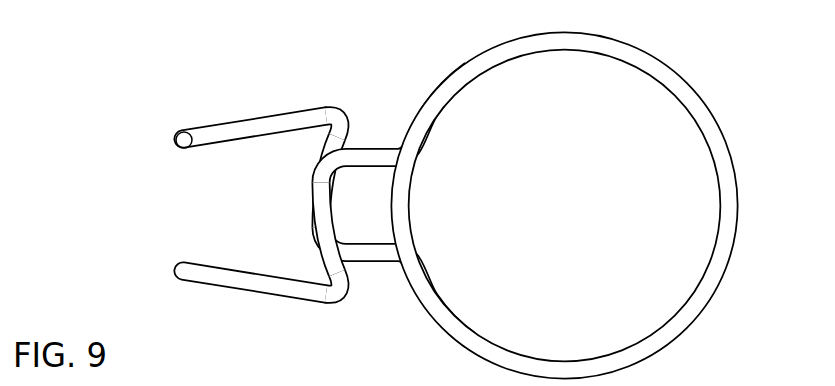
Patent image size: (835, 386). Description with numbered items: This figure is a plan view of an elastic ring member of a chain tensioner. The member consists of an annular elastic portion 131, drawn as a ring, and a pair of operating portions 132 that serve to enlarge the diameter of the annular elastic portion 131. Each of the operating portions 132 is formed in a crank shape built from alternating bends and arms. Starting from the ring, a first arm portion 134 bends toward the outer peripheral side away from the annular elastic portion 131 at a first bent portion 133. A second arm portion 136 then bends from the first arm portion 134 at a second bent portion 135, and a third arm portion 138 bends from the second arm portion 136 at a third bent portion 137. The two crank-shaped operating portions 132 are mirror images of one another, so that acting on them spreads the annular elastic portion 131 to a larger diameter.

The annular elastic portion 131 is at (717, 137).
The operating portions 132 is at (296, 175).
The first bent portion 133 is at (433, 190).
The first arm portion 134 is at (370, 243).
The second bent portion 135 is at (345, 250).
The second arm portion 136 is at (317, 240).
The third bent portion 137 is at (323, 283).
The third arm portion 138 is at (250, 274).